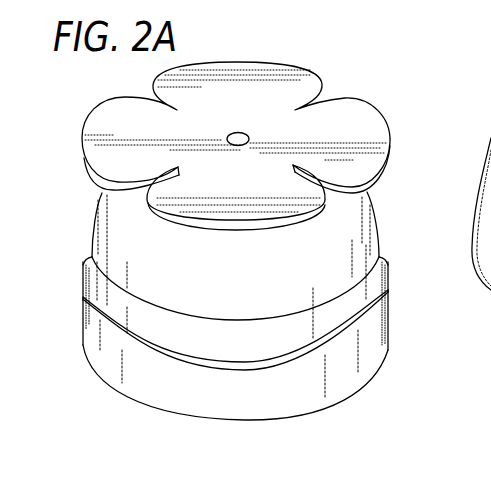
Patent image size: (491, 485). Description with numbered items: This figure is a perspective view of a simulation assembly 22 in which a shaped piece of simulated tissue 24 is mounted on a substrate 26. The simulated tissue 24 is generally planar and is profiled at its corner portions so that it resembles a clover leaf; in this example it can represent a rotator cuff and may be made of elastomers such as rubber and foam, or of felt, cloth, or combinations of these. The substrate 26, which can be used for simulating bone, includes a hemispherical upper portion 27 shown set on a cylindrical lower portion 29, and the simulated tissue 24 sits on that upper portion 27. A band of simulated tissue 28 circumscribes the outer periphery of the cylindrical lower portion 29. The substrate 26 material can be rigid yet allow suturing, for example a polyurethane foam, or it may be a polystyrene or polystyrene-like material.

The simulation assembly 22 is at (67, 270).
The simulated tissue 24 is at (366, 116).
The substrate 26 is at (400, 181).
The hemispherical upper portion 27 is at (362, 228).
The band of simulated tissue 28 is at (375, 343).
The cylindrical lower portion 29 is at (382, 273).